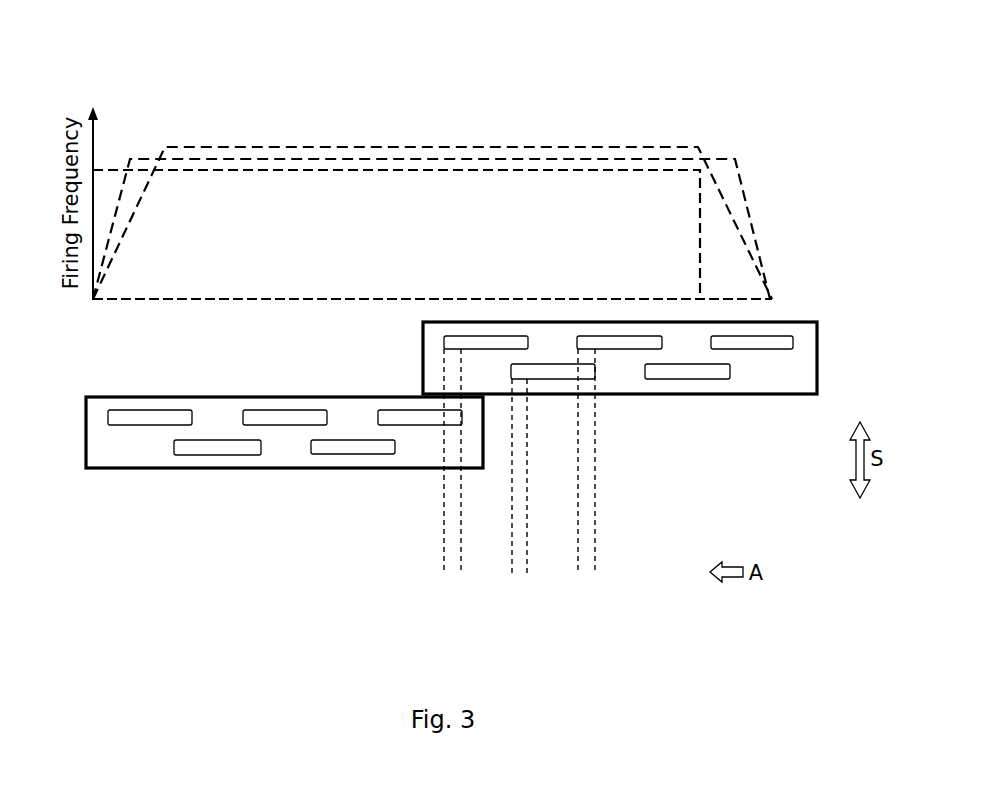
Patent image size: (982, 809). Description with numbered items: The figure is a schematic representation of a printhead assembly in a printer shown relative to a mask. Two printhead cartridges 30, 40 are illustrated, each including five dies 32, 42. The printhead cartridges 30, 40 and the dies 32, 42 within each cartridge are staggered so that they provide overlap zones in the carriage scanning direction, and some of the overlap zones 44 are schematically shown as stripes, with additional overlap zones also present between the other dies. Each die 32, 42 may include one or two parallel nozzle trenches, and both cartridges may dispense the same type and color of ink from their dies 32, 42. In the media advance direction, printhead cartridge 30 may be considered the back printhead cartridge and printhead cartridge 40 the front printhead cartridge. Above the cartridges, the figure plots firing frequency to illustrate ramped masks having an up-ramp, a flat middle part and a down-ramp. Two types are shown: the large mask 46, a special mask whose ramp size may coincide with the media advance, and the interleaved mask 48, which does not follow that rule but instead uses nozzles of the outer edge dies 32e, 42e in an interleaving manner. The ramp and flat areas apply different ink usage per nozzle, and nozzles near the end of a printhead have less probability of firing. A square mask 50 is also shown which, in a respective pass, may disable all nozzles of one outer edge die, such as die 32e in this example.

The printhead cartridge 30 is at (793, 378).
The die 32 is at (710, 370).
The outer edge die 32e is at (782, 342).
The printhead cartridge 40 is at (172, 462).
The die 42 is at (355, 446).
The outer edge die 42e is at (122, 418).
The overlap zone 44 is at (585, 568).
The large mask 46 is at (660, 146).
The interleaved mask 48 is at (744, 183).
The square mask 50 is at (700, 229).